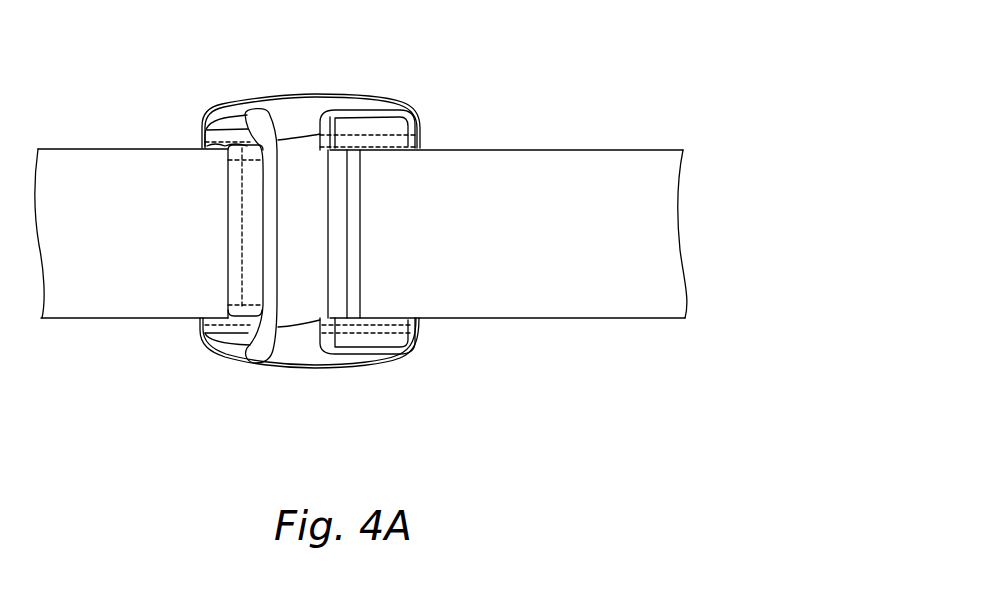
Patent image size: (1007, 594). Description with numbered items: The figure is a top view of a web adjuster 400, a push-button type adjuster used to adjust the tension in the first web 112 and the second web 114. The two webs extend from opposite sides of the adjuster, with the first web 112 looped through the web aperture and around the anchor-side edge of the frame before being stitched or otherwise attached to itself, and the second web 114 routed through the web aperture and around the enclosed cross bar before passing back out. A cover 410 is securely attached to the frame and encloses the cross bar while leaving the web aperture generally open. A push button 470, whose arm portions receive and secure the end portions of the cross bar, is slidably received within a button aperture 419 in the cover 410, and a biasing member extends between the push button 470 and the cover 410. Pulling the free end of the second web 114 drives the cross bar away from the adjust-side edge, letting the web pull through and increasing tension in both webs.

The web adjuster 400 is at (172, 88).
The cover 410 is at (297, 348).
The button aperture 419 is at (240, 175).
The push button 470 is at (235, 207).
The first web 112 is at (475, 300).
The second web 114 is at (117, 270).